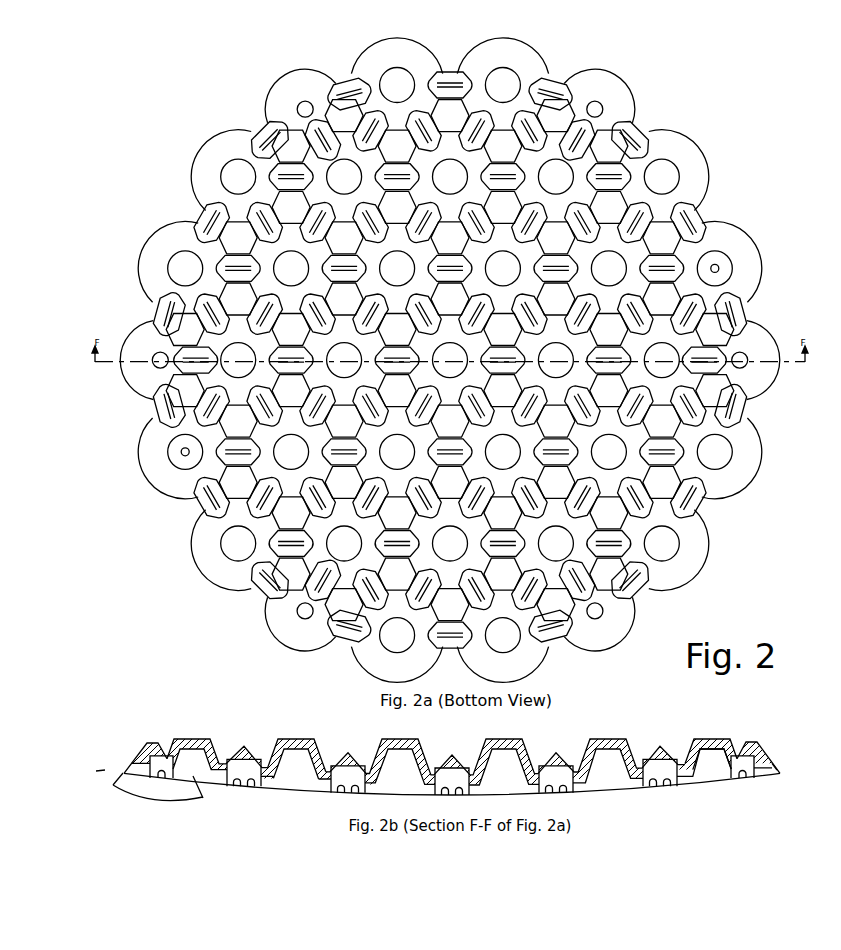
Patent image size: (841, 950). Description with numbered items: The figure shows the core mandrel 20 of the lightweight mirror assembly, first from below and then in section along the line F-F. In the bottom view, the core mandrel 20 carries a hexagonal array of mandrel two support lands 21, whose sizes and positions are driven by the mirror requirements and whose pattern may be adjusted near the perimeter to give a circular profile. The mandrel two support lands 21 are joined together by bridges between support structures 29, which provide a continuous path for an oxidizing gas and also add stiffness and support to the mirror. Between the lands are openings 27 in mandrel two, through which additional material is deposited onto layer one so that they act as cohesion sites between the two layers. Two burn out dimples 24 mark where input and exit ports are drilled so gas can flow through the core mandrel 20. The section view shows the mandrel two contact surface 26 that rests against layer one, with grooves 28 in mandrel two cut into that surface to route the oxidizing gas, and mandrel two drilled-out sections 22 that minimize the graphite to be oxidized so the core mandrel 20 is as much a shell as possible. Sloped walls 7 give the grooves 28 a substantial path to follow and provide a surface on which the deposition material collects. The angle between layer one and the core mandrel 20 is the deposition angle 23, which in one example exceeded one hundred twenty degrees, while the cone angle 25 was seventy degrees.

In FIG. 2B, the sloped walls 7 is at (771, 744).
In FIG. 2B, the core mandrel 20 is at (708, 745).
In FIG. 2A, the mandrel two support land 21 is at (181, 262).
In FIG. 2B, the mandrel two support land 21 is at (318, 751).
In FIG. 2B, the mandrel two drilled-out sections 22 is at (238, 762).
In FIG. 2B, the deposition angle 23 is at (146, 758).
In FIG. 2A, the burn out dimple 24 is at (184, 456).
In FIG. 2B, the cone angle 25 is at (149, 793).
In FIG. 2B, the mandrel two contact surface 26 is at (778, 776).
In FIG. 2A, the openings in mandrel two 27 is at (291, 575).
In FIG. 2B, the grooves in mandrel two 28 is at (697, 788).
In FIG. 2A, the bridges between support structures 29 is at (697, 218).
In FIG. 2B, the bridges between support structures 29 is at (742, 789).